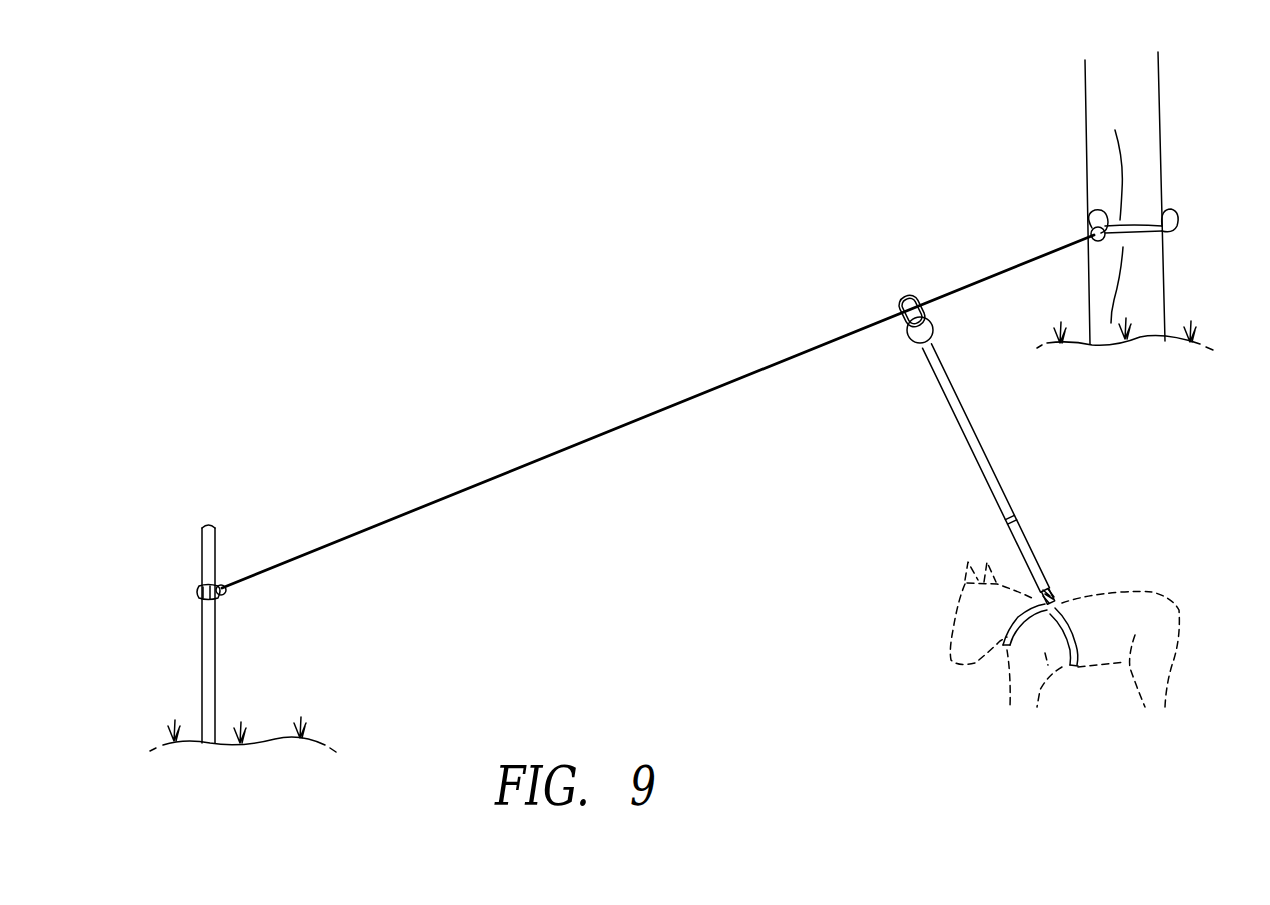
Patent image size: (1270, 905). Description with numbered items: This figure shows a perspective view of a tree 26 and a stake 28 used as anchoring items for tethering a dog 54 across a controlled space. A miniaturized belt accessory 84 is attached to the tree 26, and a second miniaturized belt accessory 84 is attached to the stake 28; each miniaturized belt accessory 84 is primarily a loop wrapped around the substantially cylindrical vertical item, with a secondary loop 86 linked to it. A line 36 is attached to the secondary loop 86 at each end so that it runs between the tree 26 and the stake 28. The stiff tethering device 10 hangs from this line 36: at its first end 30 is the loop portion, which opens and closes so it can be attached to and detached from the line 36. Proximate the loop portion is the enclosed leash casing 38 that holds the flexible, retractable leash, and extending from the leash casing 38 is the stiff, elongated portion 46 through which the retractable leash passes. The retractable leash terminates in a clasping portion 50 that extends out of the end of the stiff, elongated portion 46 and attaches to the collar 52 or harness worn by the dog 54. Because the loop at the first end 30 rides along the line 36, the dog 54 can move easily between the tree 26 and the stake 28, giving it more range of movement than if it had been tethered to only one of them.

The tethering device 10 is at (980, 467).
The tree 26 is at (1137, 290).
The stake 28 is at (214, 662).
The first end 30 is at (900, 300).
The line 36 is at (591, 437).
The leash casing 38 is at (934, 328).
The stiff, elongated portion 46 is at (958, 402).
The clasping portion 50 is at (1053, 600).
The collar 52 is at (1033, 607).
The dog 54 is at (1152, 592).
The miniaturized belt accessory 84 is at (202, 604).
The secondary loop 86 is at (226, 592).